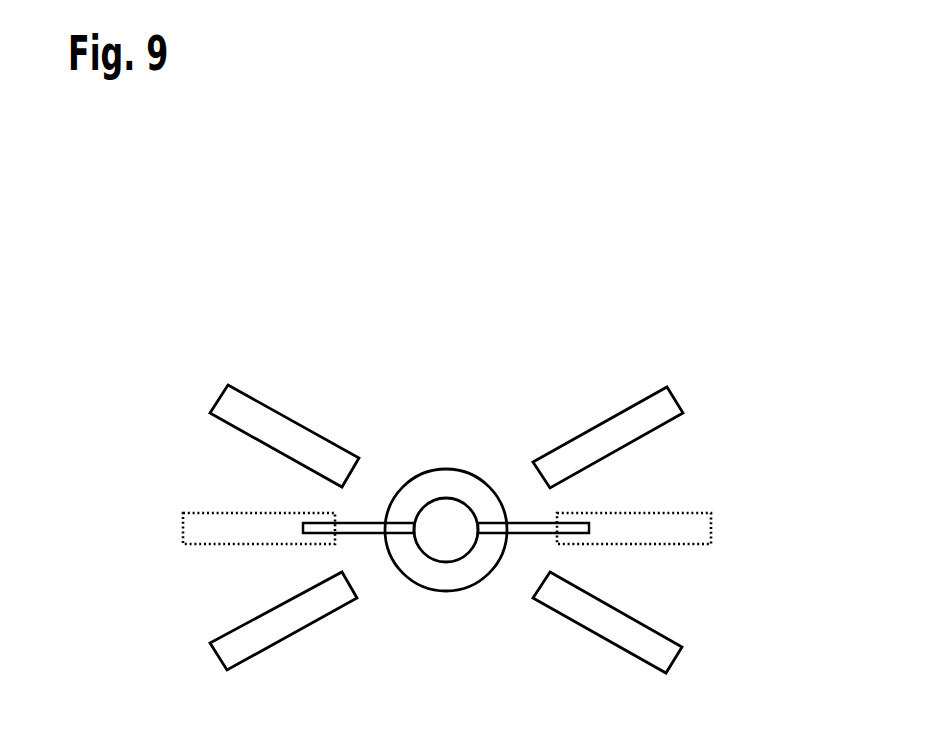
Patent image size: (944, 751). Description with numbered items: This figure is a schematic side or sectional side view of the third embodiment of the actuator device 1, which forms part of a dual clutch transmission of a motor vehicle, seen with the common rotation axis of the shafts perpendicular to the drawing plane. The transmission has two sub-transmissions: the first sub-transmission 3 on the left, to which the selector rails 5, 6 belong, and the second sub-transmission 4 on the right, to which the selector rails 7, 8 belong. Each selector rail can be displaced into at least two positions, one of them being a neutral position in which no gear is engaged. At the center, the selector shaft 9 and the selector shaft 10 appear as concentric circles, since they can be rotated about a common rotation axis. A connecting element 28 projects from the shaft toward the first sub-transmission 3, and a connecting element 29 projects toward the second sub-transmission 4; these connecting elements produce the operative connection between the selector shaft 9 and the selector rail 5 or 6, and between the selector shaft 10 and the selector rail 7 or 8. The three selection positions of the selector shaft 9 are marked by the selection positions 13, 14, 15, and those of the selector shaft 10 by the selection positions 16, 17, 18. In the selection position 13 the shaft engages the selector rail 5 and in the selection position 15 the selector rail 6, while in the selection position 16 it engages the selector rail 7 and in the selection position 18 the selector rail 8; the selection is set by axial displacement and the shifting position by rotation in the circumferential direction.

The actuator device 1 is at (590, 222).
The first sub-transmission 3 is at (98, 358).
The second sub-transmission 4 is at (797, 360).
The selector rail 5 is at (240, 404).
The selector rail 6 is at (240, 650).
The selector rail 7 is at (653, 405).
The selector rail 8 is at (652, 653).
The selector shaft 9 is at (447, 562).
The selector shaft 10 is at (447, 469).
The selection position 13 is at (193, 413).
The selection position 14 is at (123, 542).
The selection position 15 is at (192, 672).
The selection position 16 is at (702, 413).
The selection position 17 is at (737, 542).
The selection position 18 is at (702, 672).
The connecting element 28 is at (362, 537).
The connecting element 29 is at (531, 531).